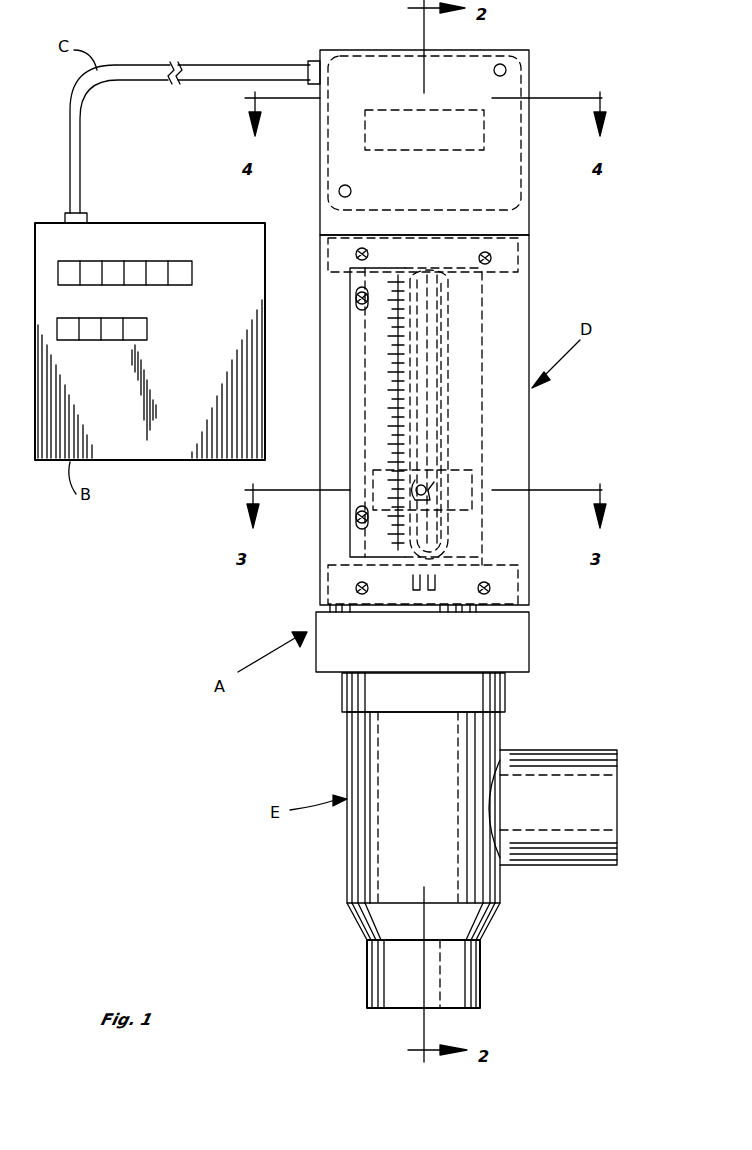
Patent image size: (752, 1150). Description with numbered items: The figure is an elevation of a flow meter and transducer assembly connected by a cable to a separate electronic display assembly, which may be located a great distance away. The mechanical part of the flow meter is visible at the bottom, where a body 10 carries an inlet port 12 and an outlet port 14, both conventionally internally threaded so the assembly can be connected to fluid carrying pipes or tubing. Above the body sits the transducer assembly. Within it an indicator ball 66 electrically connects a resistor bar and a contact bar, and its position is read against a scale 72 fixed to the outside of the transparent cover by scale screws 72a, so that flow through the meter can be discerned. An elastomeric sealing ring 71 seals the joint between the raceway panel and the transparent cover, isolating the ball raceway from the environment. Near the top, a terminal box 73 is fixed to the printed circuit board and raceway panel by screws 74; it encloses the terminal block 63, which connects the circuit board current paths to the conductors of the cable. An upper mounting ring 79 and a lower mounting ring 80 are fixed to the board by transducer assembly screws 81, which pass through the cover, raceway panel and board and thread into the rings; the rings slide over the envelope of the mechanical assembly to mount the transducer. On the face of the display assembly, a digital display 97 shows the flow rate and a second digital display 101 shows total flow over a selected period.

The body 10 is at (505, 726).
The inlet port 12 is at (400, 1013).
The outlet port 14 is at (617, 800).
The terminal block 63 is at (436, 115).
The indicator ball 66 is at (426, 486).
The elastomeric sealing ring 71 is at (445, 386).
The scale 72 is at (350, 365).
The scale screws 72a is at (356, 298).
The terminal box 73 is at (533, 199).
The screws 74 is at (506, 70).
The upper mounting ring 79 is at (520, 265).
The lower mounting ring 80 is at (519, 600).
The transducer assembly screws 81 is at (488, 264).
The digital display 97 is at (180, 262).
The second digital display 101 is at (147, 328).